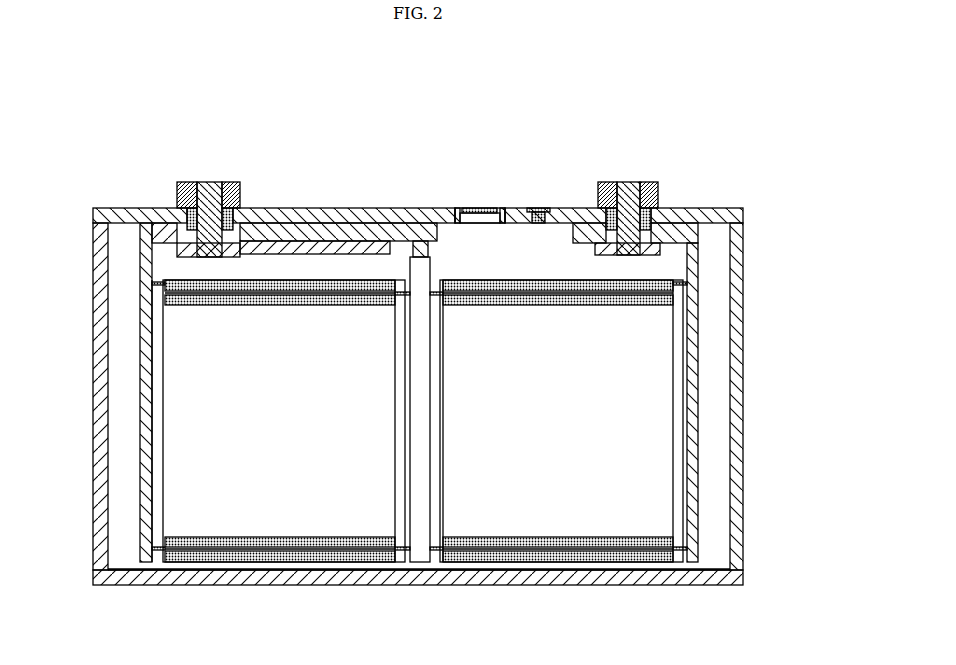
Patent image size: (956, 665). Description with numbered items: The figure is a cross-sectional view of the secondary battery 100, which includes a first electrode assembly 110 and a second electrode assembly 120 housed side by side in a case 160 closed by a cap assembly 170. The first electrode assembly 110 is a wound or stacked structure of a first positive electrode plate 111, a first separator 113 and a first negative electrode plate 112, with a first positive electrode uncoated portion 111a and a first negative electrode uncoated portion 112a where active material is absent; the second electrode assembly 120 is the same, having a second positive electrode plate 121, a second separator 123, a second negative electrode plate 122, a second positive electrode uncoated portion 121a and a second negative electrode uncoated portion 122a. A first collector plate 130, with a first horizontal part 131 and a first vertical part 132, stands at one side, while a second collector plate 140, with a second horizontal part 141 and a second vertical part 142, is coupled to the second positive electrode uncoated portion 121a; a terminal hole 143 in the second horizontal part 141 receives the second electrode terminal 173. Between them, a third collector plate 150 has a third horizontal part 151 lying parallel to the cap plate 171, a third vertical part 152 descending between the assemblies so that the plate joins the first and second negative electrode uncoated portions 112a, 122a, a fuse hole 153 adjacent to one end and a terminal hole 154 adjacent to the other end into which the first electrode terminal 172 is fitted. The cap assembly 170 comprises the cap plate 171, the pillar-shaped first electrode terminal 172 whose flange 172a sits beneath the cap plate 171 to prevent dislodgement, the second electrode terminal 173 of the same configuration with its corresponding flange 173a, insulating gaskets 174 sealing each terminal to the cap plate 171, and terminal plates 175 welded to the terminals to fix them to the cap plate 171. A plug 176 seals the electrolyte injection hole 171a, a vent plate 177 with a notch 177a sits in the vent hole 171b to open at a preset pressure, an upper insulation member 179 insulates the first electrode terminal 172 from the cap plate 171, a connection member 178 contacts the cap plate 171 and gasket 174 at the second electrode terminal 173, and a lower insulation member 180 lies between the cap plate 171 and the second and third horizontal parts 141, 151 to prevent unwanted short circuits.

The secondary battery 100 is at (745, 82).
The first electrode assembly 110 is at (352, 566).
The first positive electrode plate 111 is at (210, 562).
The first positive electrode uncoated portion 111a is at (156, 562).
The first negative electrode plate 112 is at (313, 562).
The first negative electrode uncoated portion 112a is at (400, 562).
The first separator 113 is at (277, 562).
The second electrode assembly 120 is at (637, 566).
The second positive electrode plate 121 is at (593, 562).
The second positive electrode uncoated portion 121a is at (680, 562).
The second negative electrode plate 122 is at (497, 562).
The second negative electrode uncoated portion 122a is at (440, 562).
The second separator 123 is at (565, 562).
The first collector plate 130 is at (136, 402).
The first horizontal part 131 is at (150, 224).
The first vertical part 132 is at (147, 328).
The second collector plate 140 is at (700, 402).
The second horizontal part 141 is at (743, 209).
The second vertical part 142 is at (699, 330).
The terminal hole 143 is at (650, 268).
The third collector plate 150 is at (452, 210).
The third horizontal part 151 is at (378, 232).
The third vertical part 152 is at (410, 265).
The fuse hole 153 is at (416, 243).
The terminal hole 154 is at (126, 268).
The case 160 is at (742, 493).
The cap assembly 170 is at (492, 128).
The cap plate 171 is at (342, 208).
The electrolyte injection hole 171a is at (538, 224).
The vent hole 171b is at (475, 223).
The first electrode terminal 172 is at (209, 182).
The flange 172a is at (255, 245).
The second electrode terminal 173 is at (628, 182).
The second terminal base 173a is at (598, 245).
The gasket 174 is at (236, 210).
The terminal plate 175 is at (229, 182).
The plug 176 is at (540, 208).
The vent plate 177 is at (497, 212).
The notch 177a is at (470, 208).
The connection member 178 is at (690, 207).
The upper insulation member 179 is at (146, 207).
The lower insulation member 180 is at (313, 232).